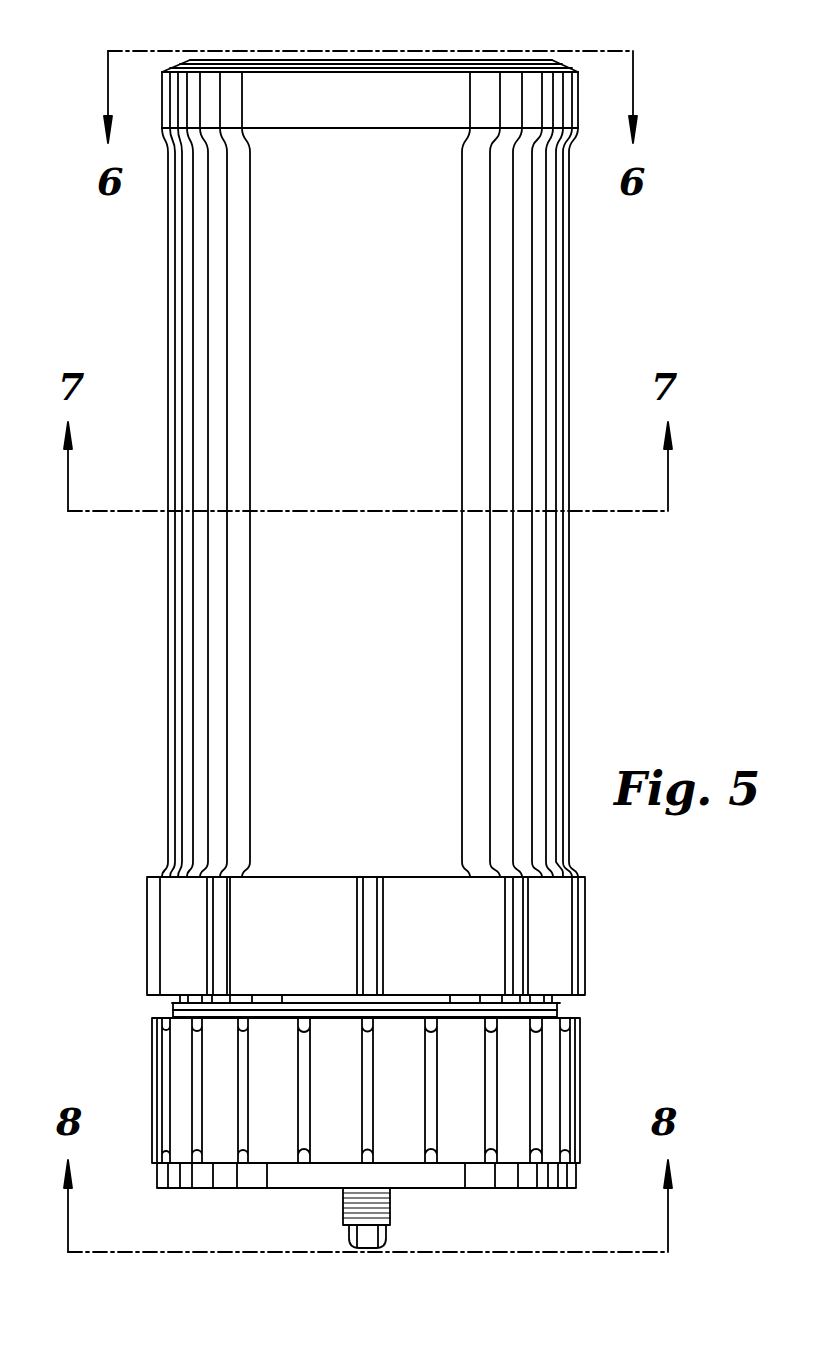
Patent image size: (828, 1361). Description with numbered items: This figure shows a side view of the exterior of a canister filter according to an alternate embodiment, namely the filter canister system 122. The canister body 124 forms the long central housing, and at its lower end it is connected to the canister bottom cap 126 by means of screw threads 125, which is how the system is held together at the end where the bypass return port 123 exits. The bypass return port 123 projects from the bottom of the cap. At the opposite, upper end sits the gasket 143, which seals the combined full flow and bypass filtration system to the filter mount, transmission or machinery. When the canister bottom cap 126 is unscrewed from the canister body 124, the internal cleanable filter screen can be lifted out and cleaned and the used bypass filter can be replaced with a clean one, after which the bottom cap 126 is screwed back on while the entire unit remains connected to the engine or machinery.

The filter canister system 122 is at (112, 698).
The bypass return port 123 is at (392, 1203).
The canister body 124 is at (433, 655).
The screw threads 125 is at (558, 1015).
The canister bottom cap 126 is at (553, 1093).
The gasket 143 is at (470, 62).